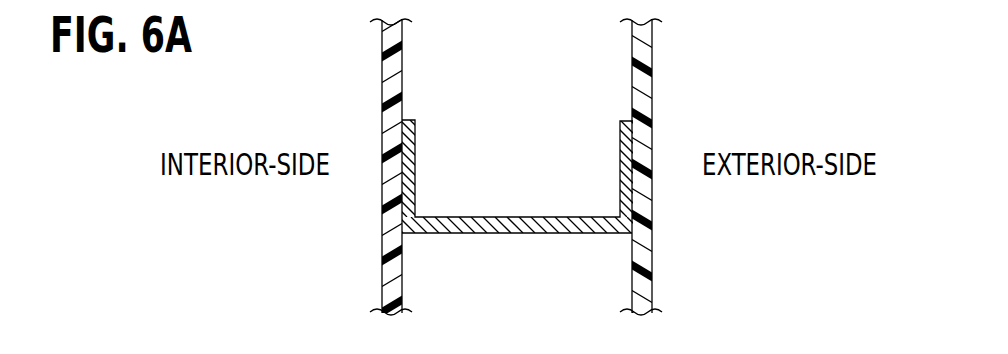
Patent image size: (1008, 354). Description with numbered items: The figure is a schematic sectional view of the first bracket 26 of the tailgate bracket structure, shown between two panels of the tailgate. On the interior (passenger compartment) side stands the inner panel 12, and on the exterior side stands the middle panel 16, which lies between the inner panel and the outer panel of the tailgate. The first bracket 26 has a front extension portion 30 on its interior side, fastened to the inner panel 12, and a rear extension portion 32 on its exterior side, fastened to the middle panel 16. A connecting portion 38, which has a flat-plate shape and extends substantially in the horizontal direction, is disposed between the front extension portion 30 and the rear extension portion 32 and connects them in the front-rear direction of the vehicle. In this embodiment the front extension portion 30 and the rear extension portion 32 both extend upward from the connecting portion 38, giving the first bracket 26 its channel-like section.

The inner panel 12 is at (384, 58).
The middle panel 16 is at (652, 58).
The first bracket 26 is at (513, 215).
The front extension portion 30 is at (415, 150).
The rear extension portion 32 is at (620, 134).
The connecting portion 38 is at (520, 217).